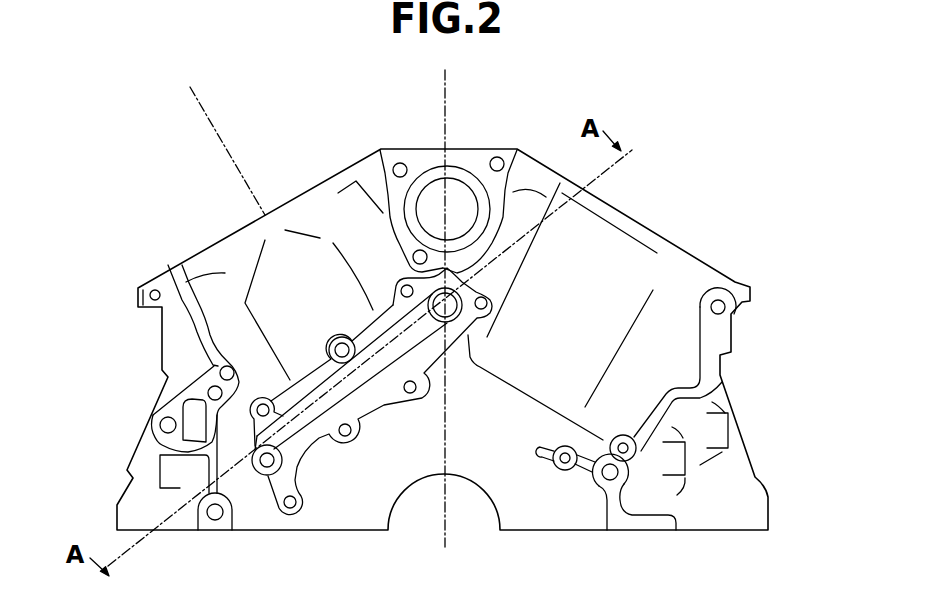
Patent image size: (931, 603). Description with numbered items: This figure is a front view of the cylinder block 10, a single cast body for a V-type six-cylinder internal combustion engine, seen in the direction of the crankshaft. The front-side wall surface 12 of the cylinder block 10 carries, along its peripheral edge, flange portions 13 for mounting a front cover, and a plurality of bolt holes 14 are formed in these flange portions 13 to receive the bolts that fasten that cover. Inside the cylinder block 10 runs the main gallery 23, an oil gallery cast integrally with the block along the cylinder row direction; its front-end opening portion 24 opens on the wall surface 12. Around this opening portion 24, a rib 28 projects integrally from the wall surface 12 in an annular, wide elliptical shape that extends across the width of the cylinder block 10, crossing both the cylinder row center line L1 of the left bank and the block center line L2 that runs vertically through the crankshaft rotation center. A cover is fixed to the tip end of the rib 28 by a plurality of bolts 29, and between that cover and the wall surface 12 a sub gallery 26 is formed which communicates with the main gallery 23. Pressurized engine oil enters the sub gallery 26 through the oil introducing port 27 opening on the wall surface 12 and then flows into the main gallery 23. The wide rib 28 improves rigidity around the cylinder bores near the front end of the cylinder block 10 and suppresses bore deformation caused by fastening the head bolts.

The cylinder block 10 is at (663, 187).
The wall surface 12 is at (460, 427).
The flange portions 13 is at (205, 343).
The bolt holes 14 is at (155, 290).
The main gallery 23 is at (519, 330).
The opening portion 24 is at (358, 369).
The sub gallery 26 is at (390, 300).
The oil introducing port 27 is at (268, 476).
The rib 28 is at (376, 400).
The bolts 29 is at (340, 337).
The cylinder row center line L1 is at (207, 115).
The block center line L2 is at (450, 103).